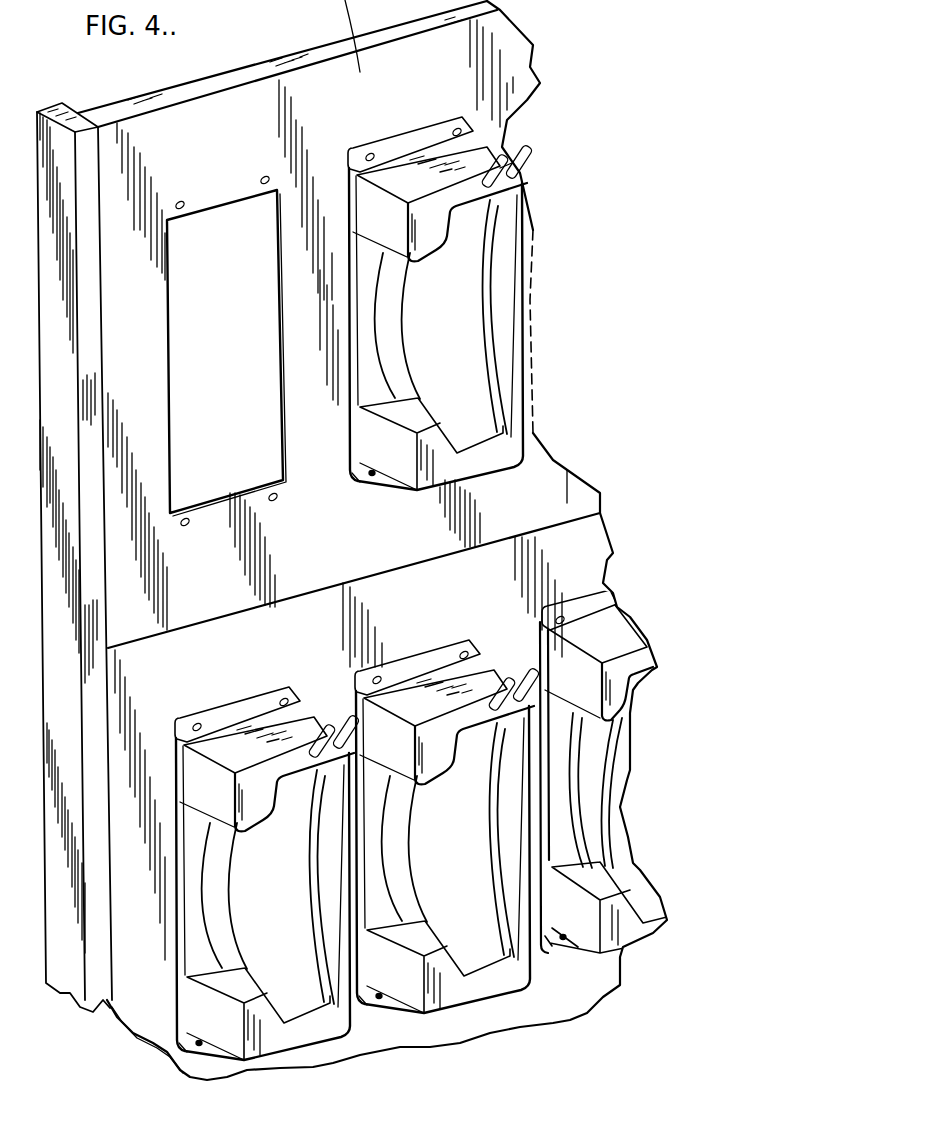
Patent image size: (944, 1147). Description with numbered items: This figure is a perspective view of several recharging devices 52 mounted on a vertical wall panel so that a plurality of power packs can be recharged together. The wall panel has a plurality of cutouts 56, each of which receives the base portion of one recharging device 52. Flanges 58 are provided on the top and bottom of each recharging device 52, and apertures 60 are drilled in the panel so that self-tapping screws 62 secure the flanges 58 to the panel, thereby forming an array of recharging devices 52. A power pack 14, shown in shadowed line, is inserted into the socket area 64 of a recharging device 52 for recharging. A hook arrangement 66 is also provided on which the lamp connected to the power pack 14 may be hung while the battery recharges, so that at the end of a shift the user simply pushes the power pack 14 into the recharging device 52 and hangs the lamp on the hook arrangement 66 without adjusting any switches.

The power pack 14 is at (546, 266).
The recharging device 52 is at (421, 562).
The cutout 56 is at (170, 316).
The flange 58 is at (436, 133).
The aperture 60 is at (181, 202).
The self-tapping screw 62 is at (371, 152).
The socket area 64 is at (464, 857).
The hook arrangement 66 is at (548, 139).